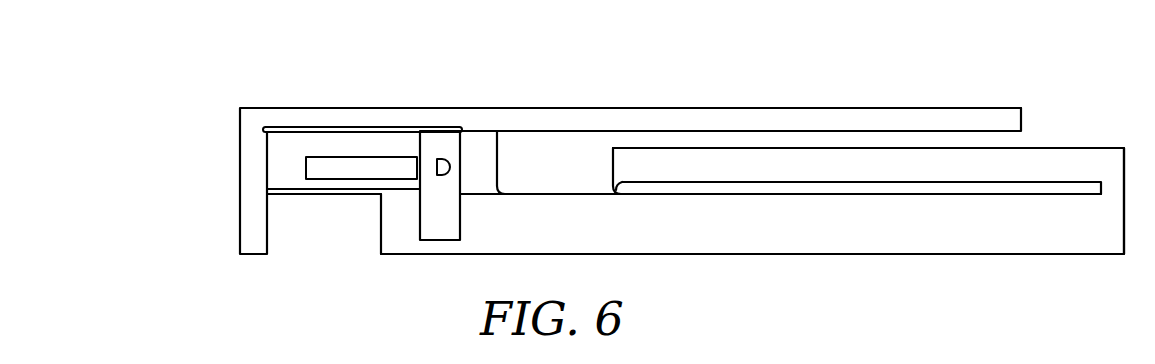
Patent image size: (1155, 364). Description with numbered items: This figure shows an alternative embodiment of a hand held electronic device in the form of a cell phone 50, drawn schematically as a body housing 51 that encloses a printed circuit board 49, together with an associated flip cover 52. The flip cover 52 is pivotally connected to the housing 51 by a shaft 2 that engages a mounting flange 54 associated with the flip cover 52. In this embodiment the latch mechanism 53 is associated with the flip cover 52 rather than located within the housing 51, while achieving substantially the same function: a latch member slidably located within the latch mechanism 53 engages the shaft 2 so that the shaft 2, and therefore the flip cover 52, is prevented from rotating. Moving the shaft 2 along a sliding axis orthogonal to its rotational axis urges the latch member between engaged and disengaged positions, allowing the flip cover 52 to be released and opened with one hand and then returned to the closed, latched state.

The cell phone 50 is at (189, 46).
The flip cover 52 is at (335, 108).
The latch mechanism 53 is at (292, 183).
The shaft 2 is at (437, 167).
The mounting flange 54 is at (440, 236).
The printed circuit board 49 is at (618, 185).
The body housing 51 is at (828, 243).